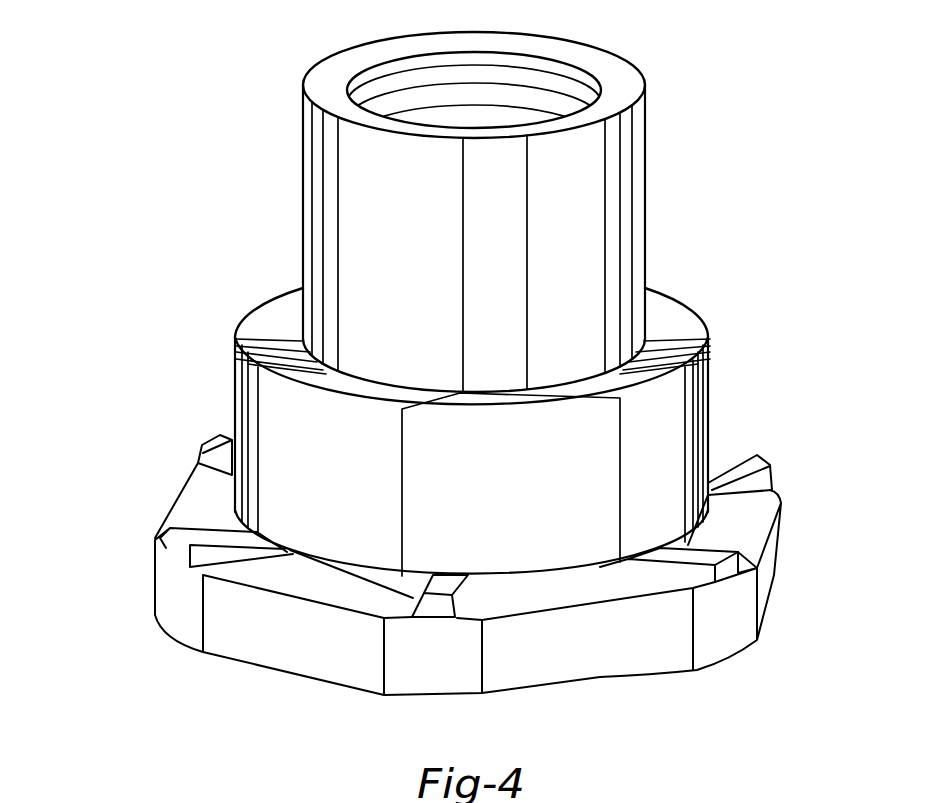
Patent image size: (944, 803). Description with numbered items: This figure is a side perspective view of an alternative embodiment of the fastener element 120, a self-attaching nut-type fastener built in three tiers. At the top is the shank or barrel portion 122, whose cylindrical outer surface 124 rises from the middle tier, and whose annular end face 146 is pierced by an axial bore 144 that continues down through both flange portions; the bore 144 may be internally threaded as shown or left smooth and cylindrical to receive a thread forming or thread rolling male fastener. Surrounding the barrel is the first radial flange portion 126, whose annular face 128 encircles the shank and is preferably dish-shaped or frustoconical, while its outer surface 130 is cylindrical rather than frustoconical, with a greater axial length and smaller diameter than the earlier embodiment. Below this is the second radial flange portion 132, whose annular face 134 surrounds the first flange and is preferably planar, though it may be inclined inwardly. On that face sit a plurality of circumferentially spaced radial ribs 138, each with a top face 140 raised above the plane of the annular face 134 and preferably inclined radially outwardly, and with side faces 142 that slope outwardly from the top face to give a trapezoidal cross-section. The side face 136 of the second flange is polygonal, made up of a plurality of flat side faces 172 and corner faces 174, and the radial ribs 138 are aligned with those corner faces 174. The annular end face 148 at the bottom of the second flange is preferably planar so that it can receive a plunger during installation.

The fastener element 120 is at (518, 288).
The shank or barrel portion 122 is at (517, 196).
The cylindrical outer surface 124 is at (414, 263).
The first radial flange portion 126 is at (518, 411).
The annular face 128 is at (684, 326).
The outer surface 130 is at (544, 466).
The second radial flange portion 132 is at (457, 550).
The annular face 134 is at (760, 527).
The side face 136 is at (343, 656).
The radial ribs 138 is at (214, 425).
The top face 140 is at (206, 537).
The side faces 142 is at (405, 600).
The bore 144 is at (537, 97).
The annular end face 146 is at (328, 82).
The annular end face 148 is at (233, 660).
The side faces 172 is at (545, 667).
The corner faces 174 is at (173, 604).